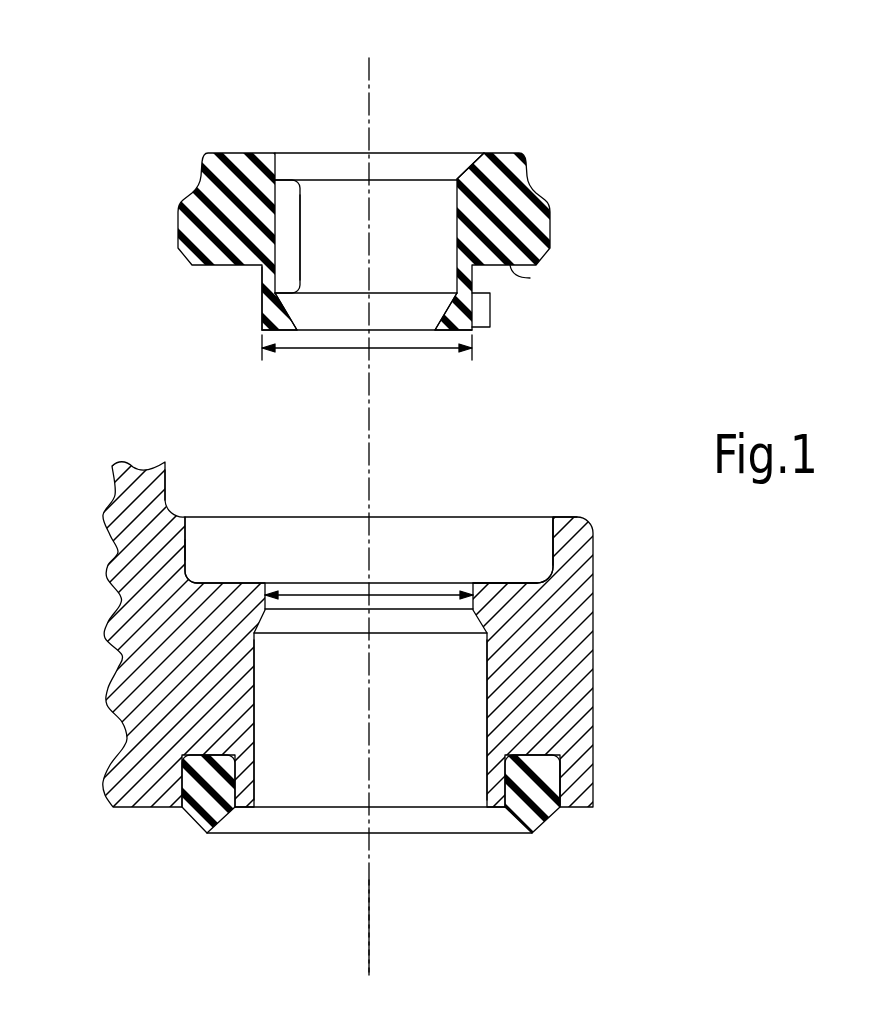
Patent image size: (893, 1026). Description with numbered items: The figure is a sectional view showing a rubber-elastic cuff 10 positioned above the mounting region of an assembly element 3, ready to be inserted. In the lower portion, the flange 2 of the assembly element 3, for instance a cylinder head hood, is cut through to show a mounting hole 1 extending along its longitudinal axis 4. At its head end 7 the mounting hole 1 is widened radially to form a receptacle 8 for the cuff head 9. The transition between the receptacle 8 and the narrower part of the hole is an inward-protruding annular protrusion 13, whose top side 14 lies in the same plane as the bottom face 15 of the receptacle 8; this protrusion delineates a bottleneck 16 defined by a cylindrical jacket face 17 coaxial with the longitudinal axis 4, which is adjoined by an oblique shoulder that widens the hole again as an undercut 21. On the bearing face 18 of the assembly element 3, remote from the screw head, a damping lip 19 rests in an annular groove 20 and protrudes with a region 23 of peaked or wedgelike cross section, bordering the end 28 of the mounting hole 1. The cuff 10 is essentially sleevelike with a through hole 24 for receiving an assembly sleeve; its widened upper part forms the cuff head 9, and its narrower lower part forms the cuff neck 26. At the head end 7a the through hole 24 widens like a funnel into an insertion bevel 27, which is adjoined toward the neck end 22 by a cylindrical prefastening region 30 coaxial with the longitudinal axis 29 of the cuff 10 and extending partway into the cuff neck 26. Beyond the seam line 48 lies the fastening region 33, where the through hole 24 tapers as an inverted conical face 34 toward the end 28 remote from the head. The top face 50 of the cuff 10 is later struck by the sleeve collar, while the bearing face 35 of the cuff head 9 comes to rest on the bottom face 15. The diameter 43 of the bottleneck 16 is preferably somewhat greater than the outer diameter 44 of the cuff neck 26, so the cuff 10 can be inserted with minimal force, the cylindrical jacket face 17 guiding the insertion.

The mounting hole 1 is at (319, 773).
The flange 2 is at (446, 673).
The assembly element 3 is at (598, 630).
The longitudinal axis 4 is at (370, 908).
The head end 7 is at (385, 545).
The head end 7a is at (297, 190).
The receptacle 8 is at (286, 535).
The cuff head 9 is at (397, 474).
The cuff 10 is at (551, 208).
The annular protrusion 13 is at (487, 583).
The top side 14 is at (222, 577).
The bottom face 15 is at (516, 583).
The bottleneck 16 is at (393, 603).
The cylindrical jacket face 17 is at (318, 603).
The bearing face 18 is at (151, 808).
The damping lip 19 is at (545, 823).
The annular groove 20 is at (560, 783).
The undercut 21 is at (480, 625).
The neck end 22 is at (262, 351).
The region 23 is at (186, 815).
The through hole 24 is at (398, 200).
The cuff neck 26 is at (262, 310).
The insertion bevel 27 is at (277, 163).
The end remote from the head 28 is at (440, 352).
The longitudinal axis 29 is at (370, 106).
The prefastening region 30 is at (305, 228).
The fastening region 33 is at (490, 310).
The inverted conical face 34 is at (320, 312).
The bearing face 35 is at (530, 278).
The diameter 43 is at (408, 593).
The outer diameter 44 is at (340, 352).
The seam line 48 is at (395, 292).
The top face 50 is at (500, 155).